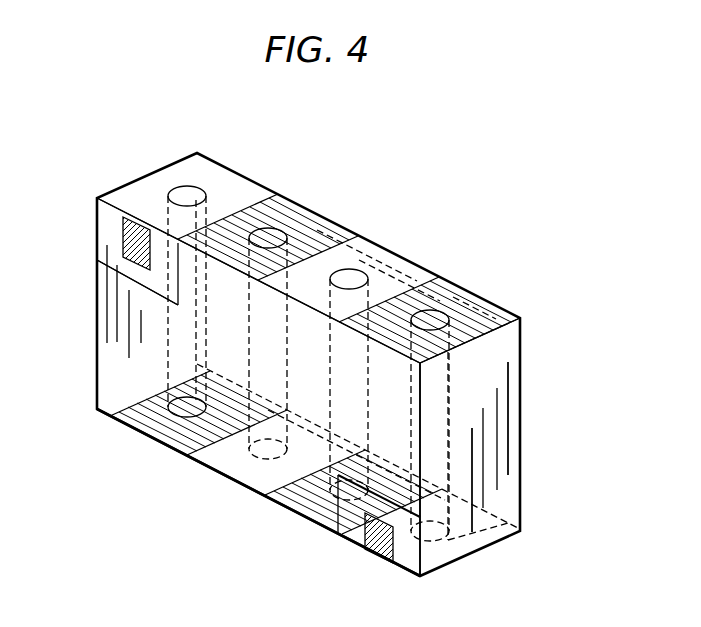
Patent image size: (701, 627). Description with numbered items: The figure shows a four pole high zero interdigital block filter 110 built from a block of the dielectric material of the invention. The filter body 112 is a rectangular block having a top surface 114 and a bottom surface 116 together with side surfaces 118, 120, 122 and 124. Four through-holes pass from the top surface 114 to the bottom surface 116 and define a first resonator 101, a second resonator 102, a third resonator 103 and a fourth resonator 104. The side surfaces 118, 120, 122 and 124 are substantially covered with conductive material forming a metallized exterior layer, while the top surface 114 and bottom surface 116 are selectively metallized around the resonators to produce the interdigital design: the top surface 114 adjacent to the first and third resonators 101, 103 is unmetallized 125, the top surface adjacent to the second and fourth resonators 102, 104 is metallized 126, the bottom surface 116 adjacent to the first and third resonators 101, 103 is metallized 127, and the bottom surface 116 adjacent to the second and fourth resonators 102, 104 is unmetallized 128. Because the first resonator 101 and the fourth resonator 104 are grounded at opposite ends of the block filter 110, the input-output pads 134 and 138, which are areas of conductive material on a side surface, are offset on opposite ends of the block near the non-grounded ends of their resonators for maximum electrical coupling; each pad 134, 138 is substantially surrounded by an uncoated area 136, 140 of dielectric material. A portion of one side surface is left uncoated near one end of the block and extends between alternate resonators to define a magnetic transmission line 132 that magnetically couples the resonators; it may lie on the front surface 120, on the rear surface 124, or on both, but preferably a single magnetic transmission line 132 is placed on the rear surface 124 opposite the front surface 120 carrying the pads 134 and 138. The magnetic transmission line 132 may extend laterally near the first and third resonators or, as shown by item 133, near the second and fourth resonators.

The interdigital block filter 110 is at (150, 123).
The first resonator 101 is at (195, 193).
The second resonator 102 is at (275, 236).
The third resonator 103 is at (350, 278).
The fourth resonator 104 is at (432, 317).
The filter body 112 is at (505, 343).
The top surface 114 is at (498, 310).
The bottom surface 116 is at (168, 444).
The side surface 118 is at (120, 348).
The front surface 120 is at (392, 460).
The side surface 122 is at (508, 445).
The rear surface 124 is at (448, 395).
The unmetallized area 125 is at (242, 194).
The metallized area 126 is at (313, 232).
The metallized area 127 is at (122, 422).
The unmetallized area 128 is at (227, 460).
The magnetic transmission line 132 is at (300, 452).
The magnetic transmission line extension 133 is at (500, 362).
The input-output pad 134 is at (125, 243).
The uncoated area 136 is at (124, 277).
The input-output pad 138 is at (372, 533).
The uncoated area 140 is at (422, 528).